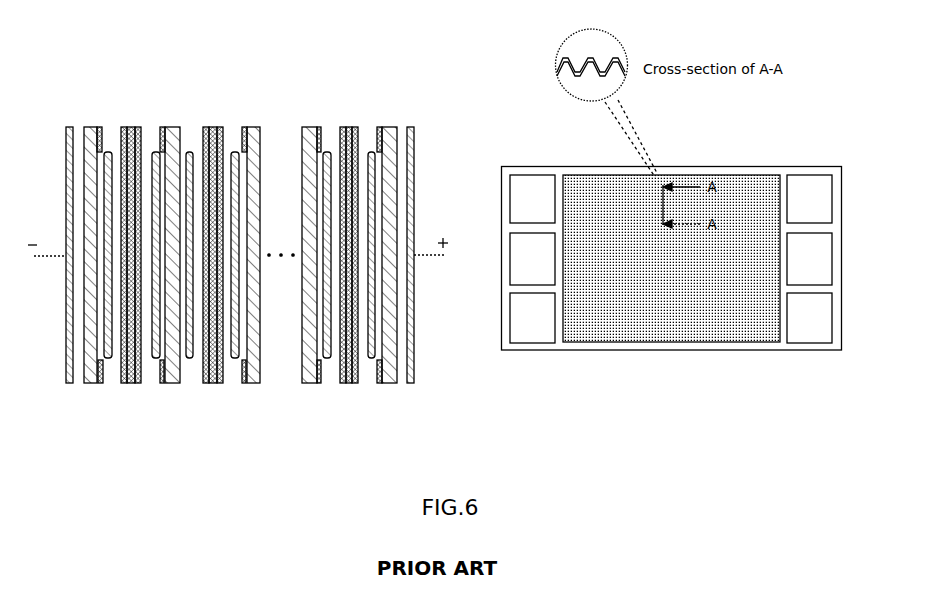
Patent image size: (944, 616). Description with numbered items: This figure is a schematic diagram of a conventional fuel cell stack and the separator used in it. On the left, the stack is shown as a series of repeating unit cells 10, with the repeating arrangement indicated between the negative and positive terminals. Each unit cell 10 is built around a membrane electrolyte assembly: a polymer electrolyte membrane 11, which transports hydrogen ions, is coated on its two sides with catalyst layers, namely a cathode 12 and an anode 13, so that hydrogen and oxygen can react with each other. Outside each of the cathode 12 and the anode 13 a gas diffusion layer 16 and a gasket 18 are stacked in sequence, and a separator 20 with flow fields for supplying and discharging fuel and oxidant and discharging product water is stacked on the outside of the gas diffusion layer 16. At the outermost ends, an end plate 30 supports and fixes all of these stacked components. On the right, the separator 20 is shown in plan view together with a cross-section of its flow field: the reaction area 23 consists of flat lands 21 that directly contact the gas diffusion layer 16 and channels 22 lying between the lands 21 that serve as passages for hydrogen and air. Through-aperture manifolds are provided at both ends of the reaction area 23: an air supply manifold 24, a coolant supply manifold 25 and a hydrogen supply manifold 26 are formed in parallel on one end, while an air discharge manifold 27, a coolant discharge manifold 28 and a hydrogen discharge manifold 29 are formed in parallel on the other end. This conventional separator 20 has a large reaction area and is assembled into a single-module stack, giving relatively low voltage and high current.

The unit cell 10 is at (197, 57).
The polymer electrolyte membrane 11 is at (124, 127).
The cathode 12 is at (138, 127).
The anode 13 is at (108, 151).
The gas diffusion layer 16 is at (107, 140).
The gasket 18 is at (101, 385).
The separator 20 is at (89, 384).
The lands 21 is at (567, 80).
The channels 22 is at (569, 55).
The reaction area 23 is at (660, 330).
The air supply manifold 24 is at (522, 200).
The coolant supply manifold 25 is at (522, 260).
The hydrogen supply manifold 26 is at (522, 313).
The air discharge manifold 27 is at (815, 318).
The coolant discharge manifold 28 is at (815, 260).
The hydrogen discharge manifold 29 is at (815, 200).
The end plate 30 is at (66, 384).